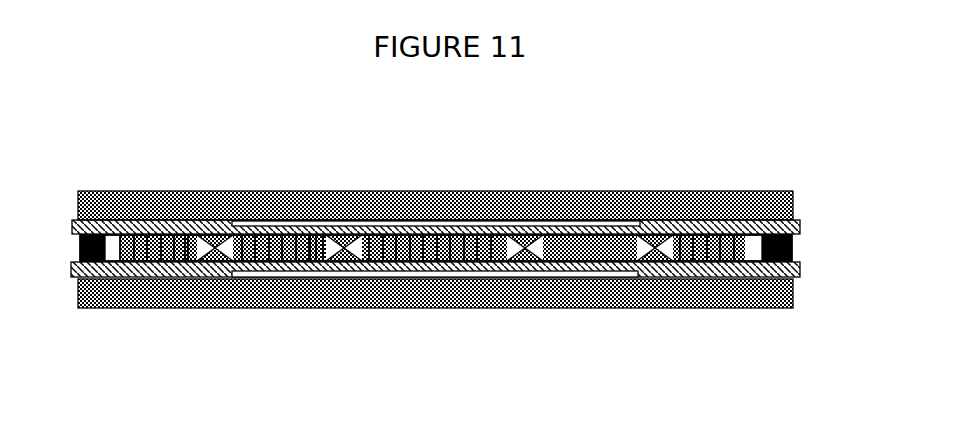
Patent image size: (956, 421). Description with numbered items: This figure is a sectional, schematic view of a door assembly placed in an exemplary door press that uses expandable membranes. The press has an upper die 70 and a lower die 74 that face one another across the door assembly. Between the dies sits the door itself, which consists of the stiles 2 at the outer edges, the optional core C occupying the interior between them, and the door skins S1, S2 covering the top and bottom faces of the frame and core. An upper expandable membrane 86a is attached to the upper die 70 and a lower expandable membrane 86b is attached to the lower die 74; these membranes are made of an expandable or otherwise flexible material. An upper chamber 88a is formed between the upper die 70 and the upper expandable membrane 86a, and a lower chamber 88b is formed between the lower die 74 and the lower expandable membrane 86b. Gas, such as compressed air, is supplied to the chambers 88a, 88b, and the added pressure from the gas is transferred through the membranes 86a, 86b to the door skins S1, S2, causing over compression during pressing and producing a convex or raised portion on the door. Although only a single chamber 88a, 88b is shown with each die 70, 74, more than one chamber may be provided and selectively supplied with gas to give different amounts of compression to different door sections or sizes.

The upper die 70 is at (130, 202).
The lower die 74 is at (742, 292).
The upper expandable membrane 86a is at (664, 232).
The lower expandable membrane 86b is at (183, 273).
The upper chamber 88a is at (340, 224).
The lower chamber 88b is at (468, 277).
The stile 2 is at (78, 238).
The core C is at (308, 250).
The door skin S1 is at (198, 237).
The door skin S2 is at (660, 275).